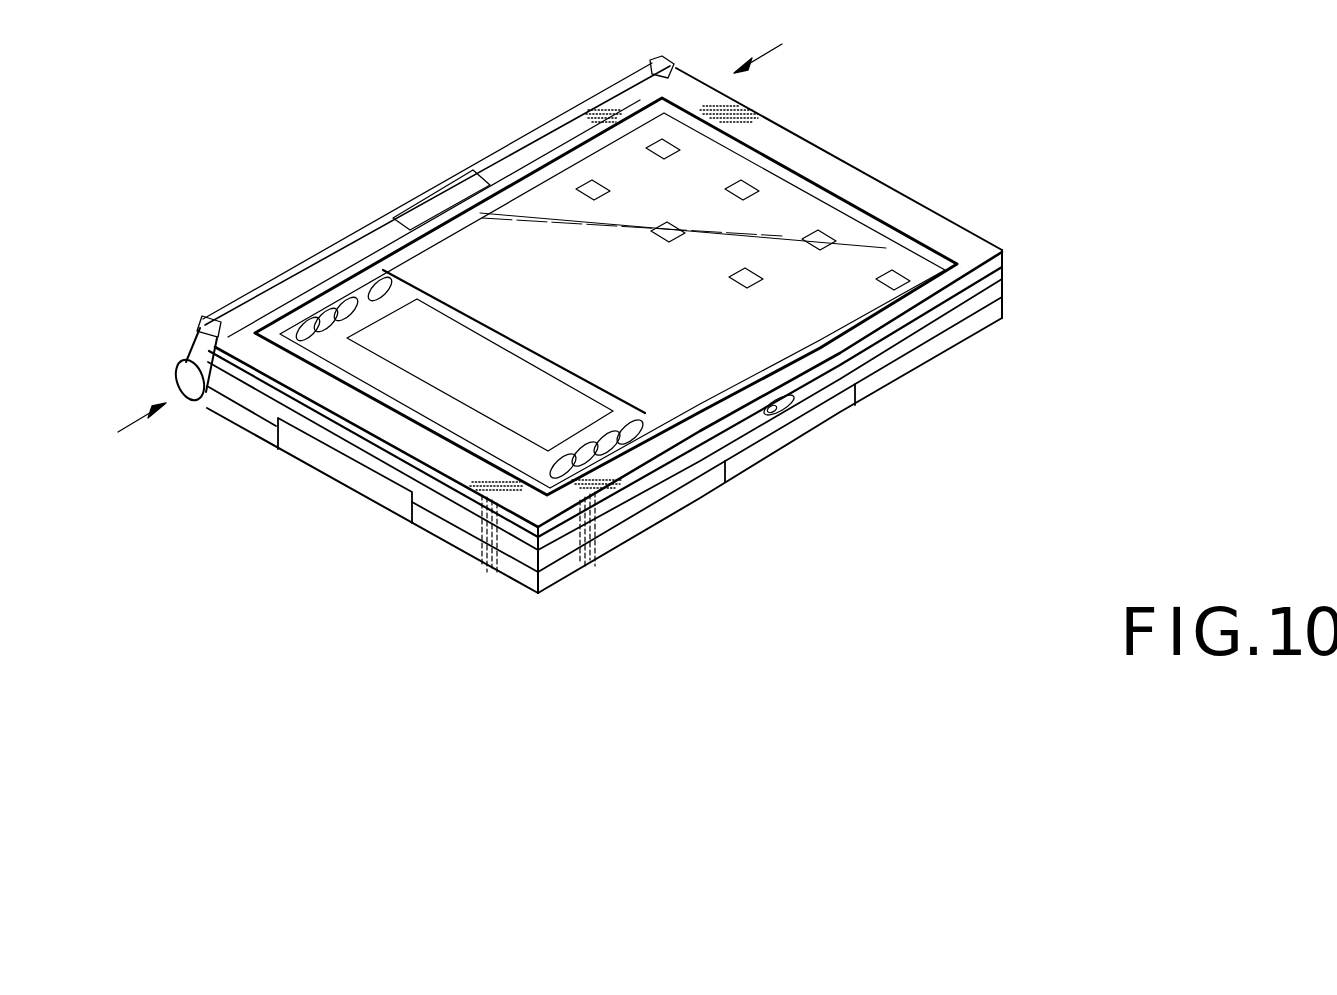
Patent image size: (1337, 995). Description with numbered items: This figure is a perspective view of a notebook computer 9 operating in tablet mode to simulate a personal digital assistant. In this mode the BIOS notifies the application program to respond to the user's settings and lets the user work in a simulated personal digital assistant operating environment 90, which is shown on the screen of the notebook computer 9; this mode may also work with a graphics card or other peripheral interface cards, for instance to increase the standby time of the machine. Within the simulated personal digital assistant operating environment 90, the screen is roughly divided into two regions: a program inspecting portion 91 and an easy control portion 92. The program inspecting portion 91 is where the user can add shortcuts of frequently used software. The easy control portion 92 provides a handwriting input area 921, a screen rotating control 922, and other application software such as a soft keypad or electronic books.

The notebook computer 9 is at (870, 446).
The simulated personal digital assistant operating environment 90 is at (746, 190).
The program inspecting portion 91 is at (480, 252).
The easy control portion 92 is at (423, 397).
The handwriting input area 921 is at (390, 327).
The screen rotating control 922 is at (633, 447).